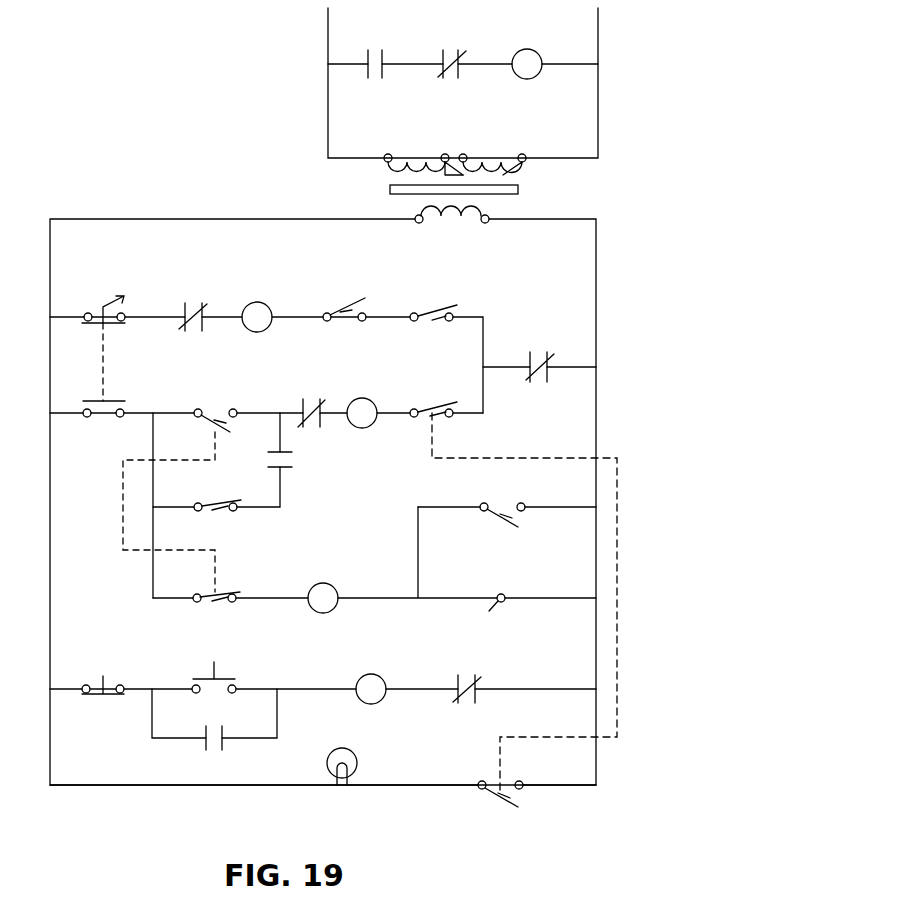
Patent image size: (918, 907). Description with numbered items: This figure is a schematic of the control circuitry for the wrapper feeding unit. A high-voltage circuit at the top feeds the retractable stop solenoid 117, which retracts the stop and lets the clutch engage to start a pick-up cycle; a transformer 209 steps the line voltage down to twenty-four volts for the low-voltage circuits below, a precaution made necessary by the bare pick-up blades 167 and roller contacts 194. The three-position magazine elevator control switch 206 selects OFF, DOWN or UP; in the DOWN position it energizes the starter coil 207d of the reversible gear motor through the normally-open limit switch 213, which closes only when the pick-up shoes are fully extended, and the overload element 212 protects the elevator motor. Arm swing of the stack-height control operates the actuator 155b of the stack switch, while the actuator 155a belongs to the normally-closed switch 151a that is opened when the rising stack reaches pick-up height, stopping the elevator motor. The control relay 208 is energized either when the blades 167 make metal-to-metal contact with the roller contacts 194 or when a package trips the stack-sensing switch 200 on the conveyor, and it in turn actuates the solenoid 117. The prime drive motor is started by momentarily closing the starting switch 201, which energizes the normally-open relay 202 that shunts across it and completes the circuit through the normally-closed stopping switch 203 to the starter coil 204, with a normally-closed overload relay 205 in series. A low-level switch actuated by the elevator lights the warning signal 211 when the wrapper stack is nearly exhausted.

The retractable stop solenoid 117 is at (530, 79).
The transformer / normally-closed limit switch 209 is at (522, 176).
The three-position magazine elevator control switch 206 is at (106, 356).
The starter coil (DOWN) of reversible gear motor 207d is at (258, 302).
The normally-open limit switch 213 is at (330, 312).
The overload element 212 is at (546, 350).
The actuator of switch 151b 155b is at (218, 433).
The actuator of switch 151a 155a is at (238, 500).
The normally-closed switch 151a is at (200, 512).
The stack-sensing switch 200 is at (523, 502).
The control relay 208 is at (335, 590).
The roller contacts 194 is at (500, 596).
The metal blades of pick-up shoes 167 is at (510, 594).
The normally-closed stopping switch 203 is at (122, 684).
The starting switch 201 is at (230, 683).
The normally-open relay 202 is at (226, 746).
The starter coil of prime drive motor 204 is at (376, 684).
The normally-closed overload relay 205 is at (477, 683).
The warning signal 211 is at (357, 763).